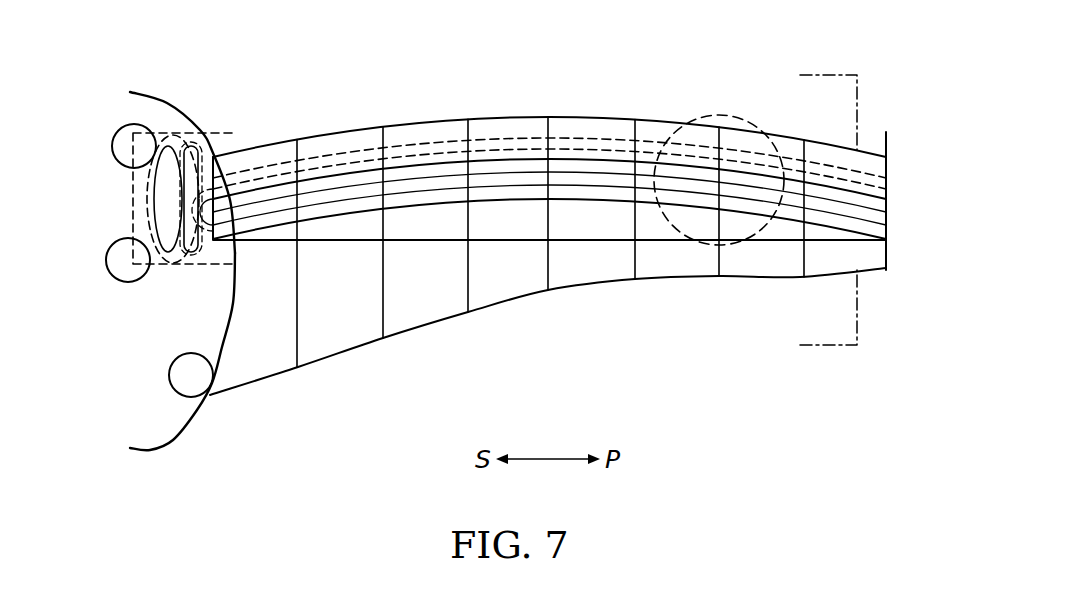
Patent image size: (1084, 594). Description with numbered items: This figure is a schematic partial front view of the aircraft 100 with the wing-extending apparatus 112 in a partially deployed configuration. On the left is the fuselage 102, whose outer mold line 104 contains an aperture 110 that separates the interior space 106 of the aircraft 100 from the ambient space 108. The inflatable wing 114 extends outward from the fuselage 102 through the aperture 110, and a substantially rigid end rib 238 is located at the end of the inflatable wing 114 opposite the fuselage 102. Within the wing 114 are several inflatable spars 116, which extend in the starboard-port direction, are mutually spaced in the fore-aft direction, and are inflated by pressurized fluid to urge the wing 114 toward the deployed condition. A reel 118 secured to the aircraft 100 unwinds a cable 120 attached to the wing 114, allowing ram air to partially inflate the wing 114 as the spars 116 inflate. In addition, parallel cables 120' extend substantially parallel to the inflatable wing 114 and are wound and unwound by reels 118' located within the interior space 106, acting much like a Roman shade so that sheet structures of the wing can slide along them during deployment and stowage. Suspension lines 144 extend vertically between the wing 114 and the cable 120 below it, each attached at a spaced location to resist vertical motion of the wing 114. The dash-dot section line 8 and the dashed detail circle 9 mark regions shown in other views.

The aircraft 100 is at (185, 74).
The fuselage 102 is at (137, 92).
The outer mold line 104 is at (173, 440).
The interior space 106 is at (173, 329).
The ambient space 108 is at (290, 84).
The aperture 110 is at (213, 157).
The apparatus 112 is at (460, 97).
The inflatable wing 114 is at (893, 187).
The inflatable spar 116 is at (532, 157).
The reel 118 is at (162, 375).
The reel 118' is at (99, 203).
The cable 120 is at (548, 337).
The parallel cable 120' is at (549, 185).
The suspension line 144 is at (468, 277).
The end rib 238 is at (892, 135).
The section line 8- 8 is at (787, 75).
The detail circle 9 is at (713, 117).